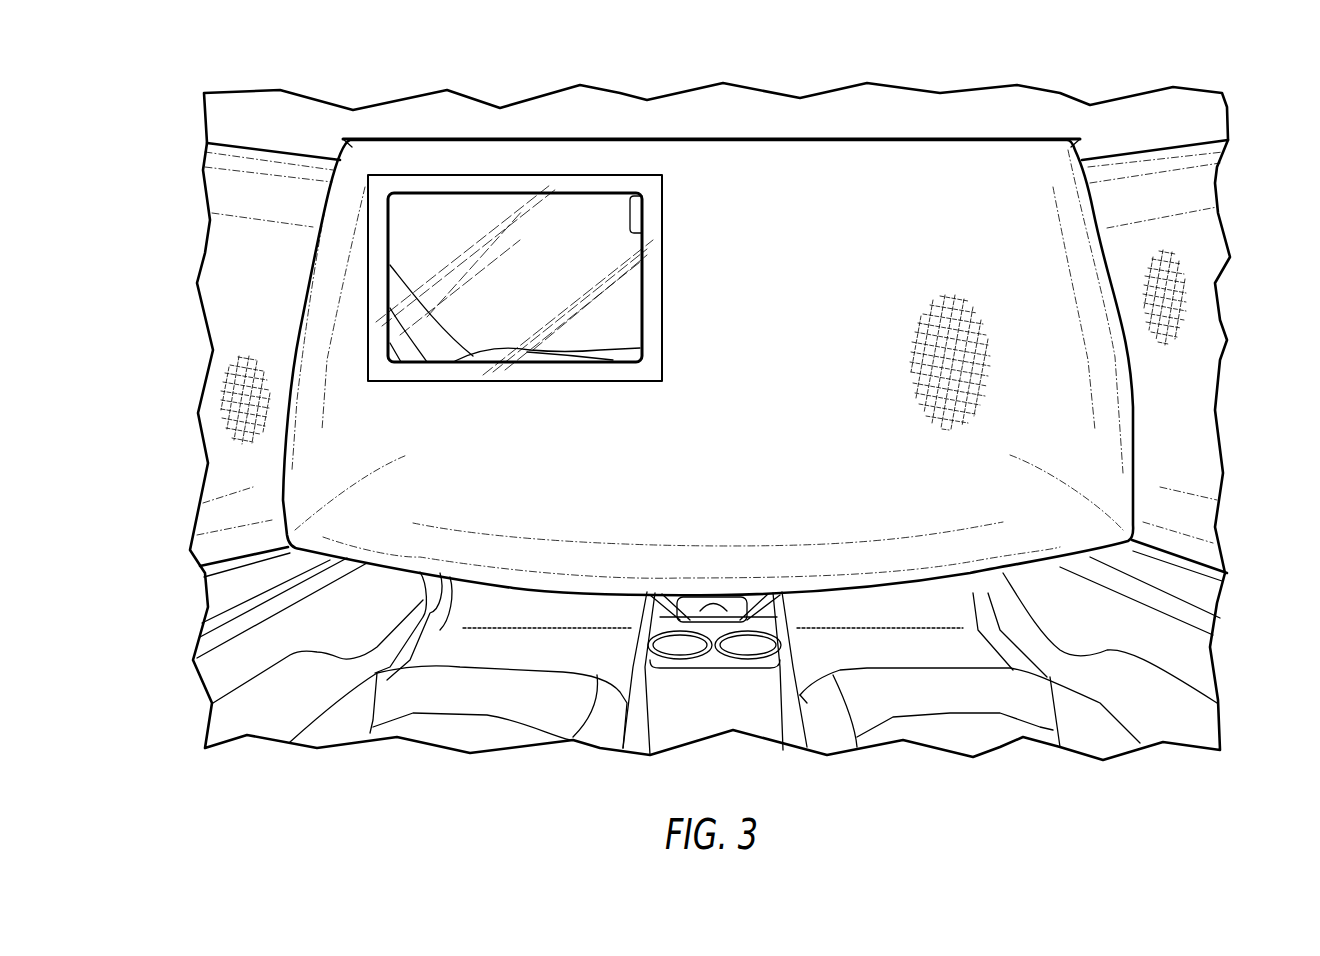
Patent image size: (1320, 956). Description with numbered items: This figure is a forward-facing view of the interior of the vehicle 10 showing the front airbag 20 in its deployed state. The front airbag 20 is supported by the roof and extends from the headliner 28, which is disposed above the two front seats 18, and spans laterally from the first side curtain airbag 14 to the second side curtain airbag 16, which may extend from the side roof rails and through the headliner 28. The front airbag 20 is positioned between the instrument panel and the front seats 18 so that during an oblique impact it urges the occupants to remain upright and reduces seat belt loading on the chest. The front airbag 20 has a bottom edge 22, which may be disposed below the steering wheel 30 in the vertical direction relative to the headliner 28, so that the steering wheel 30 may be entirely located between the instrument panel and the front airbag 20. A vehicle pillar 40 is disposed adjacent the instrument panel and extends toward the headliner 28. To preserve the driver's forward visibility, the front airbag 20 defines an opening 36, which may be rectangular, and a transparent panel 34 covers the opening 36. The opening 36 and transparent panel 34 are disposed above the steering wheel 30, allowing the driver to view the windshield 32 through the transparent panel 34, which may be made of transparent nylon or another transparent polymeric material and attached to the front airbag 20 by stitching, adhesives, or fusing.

The vehicle 10 is at (130, 124).
The first side curtain airbag 14 is at (240, 249).
The second side curtain airbag 16 is at (1187, 437).
The front seats 18 is at (552, 678).
The front airbag 20 is at (892, 170).
The bottom edge 22 is at (537, 590).
The headliner 28 is at (734, 125).
The steering wheel 30 is at (483, 352).
The windshield 32 is at (580, 248).
The transparent panel 34 is at (575, 173).
The opening 36 is at (502, 190).
The vehicle pillar 40 is at (407, 343).